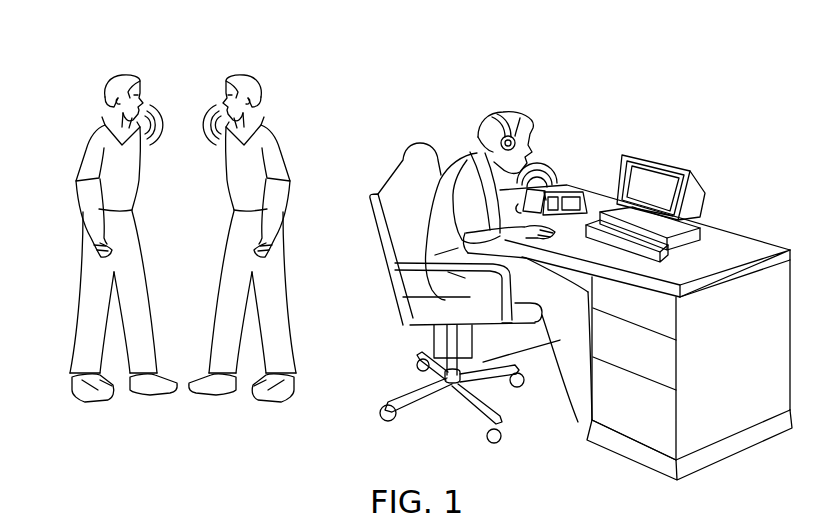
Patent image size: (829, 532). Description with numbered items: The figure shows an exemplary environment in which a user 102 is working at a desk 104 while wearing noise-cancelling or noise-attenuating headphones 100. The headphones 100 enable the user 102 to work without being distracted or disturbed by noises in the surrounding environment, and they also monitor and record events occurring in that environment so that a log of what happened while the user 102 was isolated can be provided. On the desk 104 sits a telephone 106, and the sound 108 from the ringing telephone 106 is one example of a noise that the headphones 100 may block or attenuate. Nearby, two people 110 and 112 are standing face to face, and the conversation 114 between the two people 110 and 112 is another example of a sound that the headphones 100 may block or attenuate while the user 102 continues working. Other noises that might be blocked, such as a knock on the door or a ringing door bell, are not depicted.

The headphones 100 is at (522, 92).
The user 102 is at (476, 110).
The desk 104 is at (746, 370).
The telephone 106 is at (575, 180).
The sound 108 is at (553, 175).
The person 110 is at (107, 70).
The person 112 is at (226, 70).
The conversation 114 is at (200, 121).